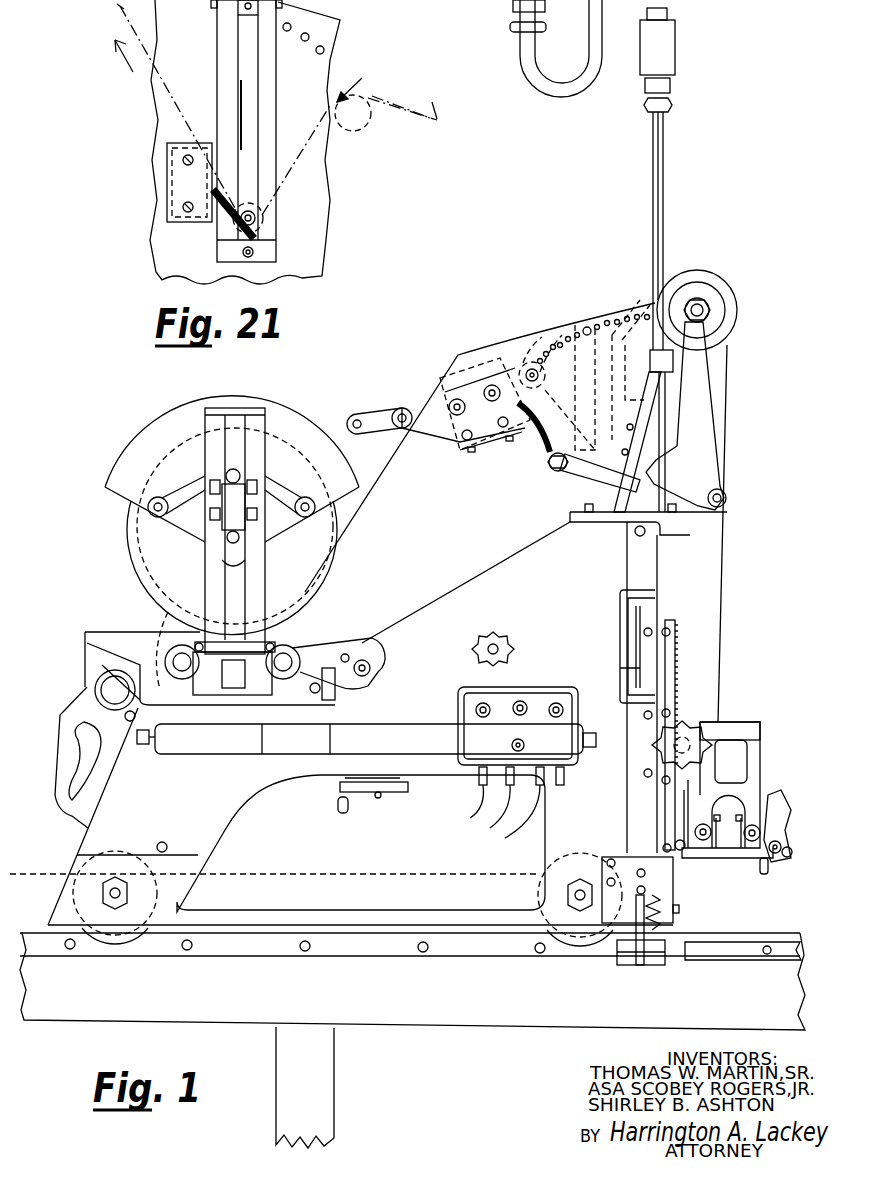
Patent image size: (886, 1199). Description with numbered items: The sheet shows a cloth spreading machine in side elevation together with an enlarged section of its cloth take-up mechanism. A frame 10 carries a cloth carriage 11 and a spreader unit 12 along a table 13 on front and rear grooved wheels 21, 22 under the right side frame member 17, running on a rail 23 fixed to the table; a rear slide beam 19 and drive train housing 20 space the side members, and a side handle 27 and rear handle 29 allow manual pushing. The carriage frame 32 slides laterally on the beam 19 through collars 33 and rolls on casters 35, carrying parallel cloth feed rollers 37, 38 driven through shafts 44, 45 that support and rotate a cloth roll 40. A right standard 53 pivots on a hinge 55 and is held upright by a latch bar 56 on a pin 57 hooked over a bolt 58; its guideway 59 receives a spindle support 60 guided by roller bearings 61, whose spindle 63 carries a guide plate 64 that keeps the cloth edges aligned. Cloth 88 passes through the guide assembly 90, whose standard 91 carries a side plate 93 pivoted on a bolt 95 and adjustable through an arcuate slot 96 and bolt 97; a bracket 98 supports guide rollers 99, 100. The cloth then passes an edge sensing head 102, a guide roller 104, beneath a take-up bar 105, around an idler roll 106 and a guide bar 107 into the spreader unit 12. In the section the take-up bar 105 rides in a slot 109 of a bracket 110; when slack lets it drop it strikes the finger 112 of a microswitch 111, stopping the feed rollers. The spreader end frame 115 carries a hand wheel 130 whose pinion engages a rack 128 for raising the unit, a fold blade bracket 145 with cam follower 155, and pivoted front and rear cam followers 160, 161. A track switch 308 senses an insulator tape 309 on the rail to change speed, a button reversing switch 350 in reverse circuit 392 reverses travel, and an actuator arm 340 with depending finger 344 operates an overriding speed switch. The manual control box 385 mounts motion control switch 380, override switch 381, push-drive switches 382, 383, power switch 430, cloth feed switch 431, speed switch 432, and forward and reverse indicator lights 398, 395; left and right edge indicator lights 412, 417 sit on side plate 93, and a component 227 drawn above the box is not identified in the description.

In FIG. 21, the frame 10 is at (353, 83).
In FIG. 1, the frame 10 is at (618, 578).
In FIG. 1, the cloth carriage 11 is at (134, 630).
In FIG. 1, the spreader unit 12 is at (765, 710).
In FIG. 1, the table 13 is at (452, 1007).
In FIG. 1, the right side frame member 17 is at (205, 804).
In FIG. 1, the rear slide beam 19 is at (108, 690).
In FIG. 1, the drive train assembly housing 20 is at (365, 636).
In FIG. 1, the front circumferentially grooved wheel 21 is at (568, 938).
In FIG. 1, the rear circumferentially grooved wheel 22 is at (116, 937).
In FIG. 1, the track or rail 23 is at (252, 950).
In FIG. 1, the side handle 27 is at (620, 612).
In FIG. 1, the rear handle 29 is at (60, 754).
In FIG. 1, the carriage frame 32 is at (350, 648).
In FIG. 1, the collars or sleeves 33 is at (96, 652).
In FIG. 1, the rollers or casters 35 is at (320, 708).
In FIG. 1, the cloth feed roller 37 is at (300, 708).
In FIG. 1, the cloth feed roller 38 is at (167, 612).
In FIG. 1, the cloth roll 40 is at (152, 556).
In FIG. 1, the cloth feed roller shaft 44 is at (330, 688).
In FIG. 1, the cloth feed roller shaft 45 is at (369, 739).
In FIG. 1, the right upright standard 53 is at (248, 558).
In FIG. 1, the hinge 55 is at (290, 708).
In FIG. 1, the pivoted latch bar 56 is at (258, 640).
In FIG. 1, the pin 57 is at (184, 652).
In FIG. 1, the bolt 58 is at (298, 646).
In FIG. 1, the vertical slot or guideway 59 is at (255, 444).
In FIG. 1, the spindle support 60 is at (248, 472).
In FIG. 1, the roller bearings 61 is at (212, 486).
In FIG. 1, the spindle 63 is at (228, 540).
In FIG. 1, the cloth roll guide plate 64 is at (132, 452).
In FIG. 21, the cloth 88 is at (406, 95).
In FIG. 1, the cloth 88 is at (728, 578).
In FIG. 1, the intermediate cloth guide assembly 90 is at (566, 312).
In FIG. 1, the standard 91 is at (688, 392).
In FIG. 21, the side plate 93 is at (210, 120).
In FIG. 1, the side plate 93 is at (556, 418).
In FIG. 1, the bolt 95 is at (668, 302).
In FIG. 1, the arcuate slot 96 is at (532, 444).
In FIG. 1, the bolt 97 is at (554, 472).
In FIG. 1, the side bracket 98 is at (400, 408).
In FIG. 1, the cloth guide roller 99 is at (425, 438).
In FIG. 1, the cloth guide roller 100 is at (372, 402).
In FIG. 1, the edge sensing head 102 is at (470, 368).
In FIG. 21, the guide roller 104 is at (362, 128).
In FIG. 1, the guide roller 104 is at (542, 356).
In FIG. 21, the cloth take-up bar 105 is at (262, 222).
In FIG. 1, the cloth take-up bar 105 is at (600, 476).
In FIG. 1, the idler feed roll 106 is at (732, 300).
In FIG. 1, the guide bar or roller 107 is at (728, 498).
In FIG. 21, the slot 109 is at (258, 90).
In FIG. 1, the slot 109 is at (549, 375).
In FIG. 21, the elongated bracket 110 is at (222, 55).
In FIG. 1, the elongated bracket 110 is at (645, 316).
In FIG. 21, the microswitch 111 is at (176, 209).
In FIG. 1, the microswitch 111 is at (625, 372).
In FIG. 21, the switch finger 112 is at (222, 234).
In FIG. 1, the spreader end frame 115 is at (754, 752).
In FIG. 1, the rack 128 is at (677, 632).
In FIG. 1, the hand wheel 130 is at (692, 718).
In FIG. 1, the fold blade bracket 145 is at (773, 796).
In FIG. 1, the cam follower 155 is at (768, 864).
In FIG. 1, the front cam follower 160 is at (770, 856).
In FIG. 1, the rear cam follower 161 is at (675, 862).
In FIG. 1, the knob 227 is at (499, 634).
In FIG. 1, the track switch 308 is at (652, 968).
In FIG. 1, the insulator tape 309 is at (746, 958).
In FIG. 1, the actuator arm 340 is at (366, 800).
In FIG. 1, the finger 344 is at (338, 808).
In FIG. 1, the button reversing switch 350 is at (680, 912).
In FIG. 1, the manual motion control switch 380 is at (483, 798).
In FIG. 1, the manual override switch 381 is at (566, 786).
In FIG. 1, the manual momentary push-drive switch 382 is at (592, 748).
In FIG. 1, the manual momentary push-drive switch 383 is at (141, 748).
In FIG. 1, the manual control box 385 is at (580, 728).
In FIG. 1, the parallel circuit 392 is at (557, 702).
In FIG. 1, the reverse indicator light 395 is at (483, 702).
In FIG. 1, the forward indicator light 398 is at (521, 700).
In FIG. 1, the left indicator light 412 is at (457, 398).
In FIG. 1, the right indicator light 417 is at (492, 385).
In FIG. 1, the manual motor or power switch 430 is at (482, 790).
In FIG. 1, the manual cloth feed switch 431 is at (503, 807).
In FIG. 1, the manual switch 432 is at (511, 745).